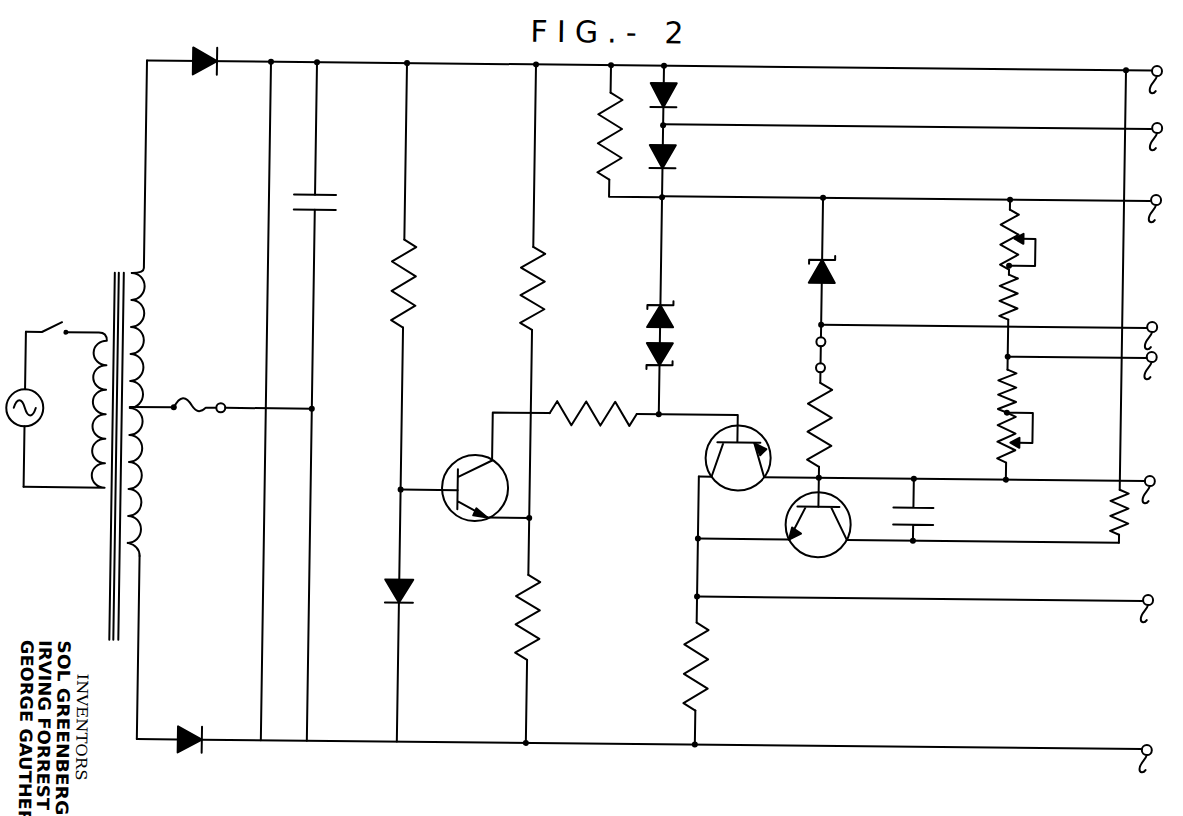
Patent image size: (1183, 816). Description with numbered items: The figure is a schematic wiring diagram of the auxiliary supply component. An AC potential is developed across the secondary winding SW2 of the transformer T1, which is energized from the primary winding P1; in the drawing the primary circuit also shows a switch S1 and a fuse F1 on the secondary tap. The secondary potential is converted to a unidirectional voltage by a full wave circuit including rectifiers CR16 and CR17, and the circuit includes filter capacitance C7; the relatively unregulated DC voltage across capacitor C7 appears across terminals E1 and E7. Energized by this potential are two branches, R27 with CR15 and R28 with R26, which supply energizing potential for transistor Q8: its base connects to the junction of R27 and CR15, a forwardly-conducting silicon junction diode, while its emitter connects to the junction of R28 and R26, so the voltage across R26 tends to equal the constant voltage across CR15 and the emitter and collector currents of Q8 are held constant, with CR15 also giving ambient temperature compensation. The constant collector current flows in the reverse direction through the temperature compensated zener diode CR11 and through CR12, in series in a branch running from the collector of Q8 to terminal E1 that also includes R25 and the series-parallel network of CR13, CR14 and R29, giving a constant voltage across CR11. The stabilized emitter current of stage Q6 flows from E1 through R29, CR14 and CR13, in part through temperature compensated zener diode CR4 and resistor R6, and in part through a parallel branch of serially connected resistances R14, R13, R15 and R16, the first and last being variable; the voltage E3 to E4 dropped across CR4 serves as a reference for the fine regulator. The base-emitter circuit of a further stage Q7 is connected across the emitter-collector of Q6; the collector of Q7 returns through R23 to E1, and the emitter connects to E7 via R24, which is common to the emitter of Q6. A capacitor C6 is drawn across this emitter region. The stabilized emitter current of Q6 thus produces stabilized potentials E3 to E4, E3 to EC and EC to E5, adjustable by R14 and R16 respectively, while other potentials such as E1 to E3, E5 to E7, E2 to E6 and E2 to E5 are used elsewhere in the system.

The transformer T1 is at (115, 290).
The primary winding P1 is at (108, 437).
The secondary winding SW2 is at (148, 490).
The switch with AC source S1 is at (61, 324).
The fuse F1 is at (187, 417).
The rectifier CR17 is at (218, 52).
The rectifier CR16 is at (214, 746).
The forwardly-conducting silicon junction diode CR15 is at (394, 603).
The diode CR14 is at (674, 103).
The diode CR13 is at (674, 164).
The temperature compensated zener diode CR11 is at (676, 298).
The diode CR12 is at (675, 362).
The temperature compensated zener diode CR4 is at (841, 250).
The filter capacitance C7 is at (339, 194).
The capacitor C6 is at (937, 494).
The resistor R27 is at (420, 254).
The resistor R28 is at (550, 255).
The resistor R29 is at (601, 102).
The resistor R26 is at (528, 596).
The resistor R25 is at (588, 398).
The resistor R24 is at (713, 646).
The resistor R6 is at (838, 390).
The variable resistance R14 is at (1005, 219).
The resistance R13 is at (1001, 285).
The resistance R15 is at (1005, 367).
The variable resistance R16 is at (1004, 425).
The resistor R23 is at (1120, 490).
The transistor Q8 is at (461, 457).
The transistor stage Q6 is at (709, 451).
The further stage Q7 is at (794, 509).
The terminal E1 is at (1164, 87).
The terminal E2 is at (1165, 144).
The terminal E3 is at (1164, 216).
The terminal E4 is at (1159, 342).
The terminal EC is at (1160, 373).
The terminal E5 is at (1157, 496).
The terminal E6 is at (1156, 615).
The terminal E7 is at (1154, 765).